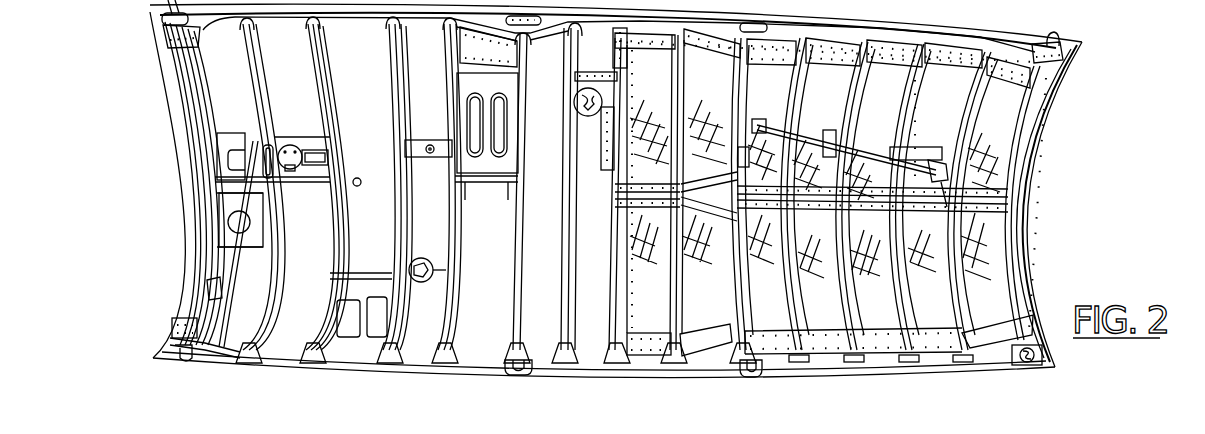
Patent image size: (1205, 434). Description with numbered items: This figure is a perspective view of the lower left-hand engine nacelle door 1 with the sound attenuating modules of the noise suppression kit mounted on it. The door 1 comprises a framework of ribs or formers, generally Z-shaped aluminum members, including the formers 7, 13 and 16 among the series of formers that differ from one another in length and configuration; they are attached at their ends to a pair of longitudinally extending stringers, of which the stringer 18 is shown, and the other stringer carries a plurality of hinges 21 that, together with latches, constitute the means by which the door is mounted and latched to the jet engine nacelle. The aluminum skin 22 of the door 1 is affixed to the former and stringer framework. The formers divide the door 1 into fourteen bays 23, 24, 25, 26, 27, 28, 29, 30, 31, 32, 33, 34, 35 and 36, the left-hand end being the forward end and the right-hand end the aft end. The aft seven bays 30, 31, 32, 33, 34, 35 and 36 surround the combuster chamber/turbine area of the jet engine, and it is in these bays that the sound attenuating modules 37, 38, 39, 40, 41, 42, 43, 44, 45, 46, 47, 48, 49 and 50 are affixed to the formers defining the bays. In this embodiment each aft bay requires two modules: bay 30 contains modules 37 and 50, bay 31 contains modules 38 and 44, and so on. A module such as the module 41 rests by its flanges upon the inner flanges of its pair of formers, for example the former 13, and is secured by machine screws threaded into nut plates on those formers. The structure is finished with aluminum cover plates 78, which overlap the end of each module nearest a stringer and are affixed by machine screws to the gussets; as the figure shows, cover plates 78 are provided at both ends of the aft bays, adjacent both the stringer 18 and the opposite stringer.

The lower left-hand engine nacelle door 1 is at (1038, 196).
The former 7 is at (808, 297).
The former 13 is at (825, 31).
The former 16 is at (812, 42).
The stringer 18 is at (319, 24).
The hinges 21 is at (619, 26).
The aluminum skin 22 is at (183, 224).
The bay 23 is at (250, 288).
The bay 24 is at (318, 262).
The bay 25 is at (385, 242).
The bay 26 is at (453, 316).
The bay 27 is at (514, 290).
The bay 28 is at (545, 309).
The bay 29 is at (593, 327).
The bay 30 is at (655, 304).
The bay 31 is at (718, 319).
The bay 32 is at (775, 309).
The bay 33 is at (822, 299).
The bay 34 is at (875, 317).
The bay 35 is at (950, 314).
The bay 36 is at (998, 292).
The sound attenuating module 37 is at (655, 290).
The sound attenuating module 38 is at (709, 287).
The sound attenuating module 39 is at (762, 284).
The sound attenuating module 40 is at (814, 231).
The sound attenuating module 41 is at (868, 234).
The sound attenuating module 42 is at (921, 231).
The sound attenuating module 43 is at (997, 284).
The sound attenuating module 44 is at (1001, 122).
The sound attenuating module 45 is at (941, 114).
The sound attenuating module 46 is at (882, 114).
The sound attenuating module 47 is at (827, 106).
The sound attenuating module 48 is at (772, 106).
The sound attenuating module 49 is at (712, 106).
The sound attenuating module 50 is at (658, 102).
The cover plate 78 is at (885, 48).